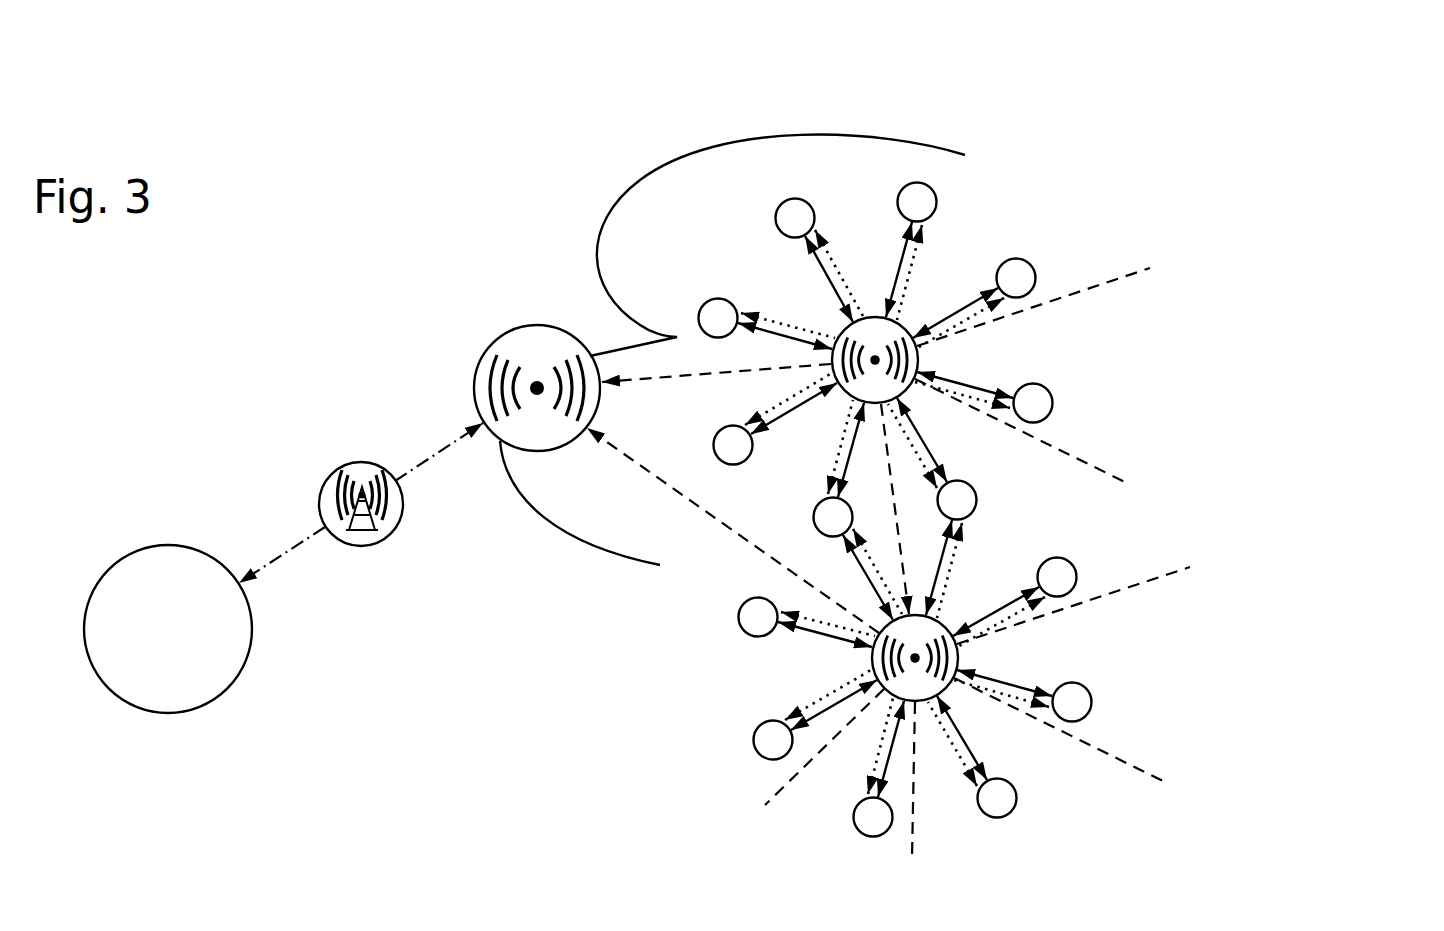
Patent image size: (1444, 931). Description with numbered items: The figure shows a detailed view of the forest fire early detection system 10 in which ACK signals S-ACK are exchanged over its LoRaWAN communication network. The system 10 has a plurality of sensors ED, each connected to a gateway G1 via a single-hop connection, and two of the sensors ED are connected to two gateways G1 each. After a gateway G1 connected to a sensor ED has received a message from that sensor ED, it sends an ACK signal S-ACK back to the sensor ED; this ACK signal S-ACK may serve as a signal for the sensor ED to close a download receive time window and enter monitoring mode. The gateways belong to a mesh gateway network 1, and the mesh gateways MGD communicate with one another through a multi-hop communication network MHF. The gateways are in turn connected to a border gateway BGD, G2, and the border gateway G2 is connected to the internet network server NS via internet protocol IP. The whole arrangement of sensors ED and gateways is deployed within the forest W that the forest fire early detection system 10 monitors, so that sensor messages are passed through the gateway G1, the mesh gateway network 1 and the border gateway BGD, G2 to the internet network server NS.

The forest fire early detection system 10 is at (777, 197).
The border gateway device BGD is at (409, 351).
The border gateway G2 is at (490, 350).
The internet protocol IP is at (318, 506).
The internet network server NS is at (168, 629).
The forest W is at (530, 515).
The mesh gateway device MGD is at (1139, 668).
The gateway G1 is at (960, 655).
The ACK signal S-ACK is at (907, 272).
The end devices/sensors ED is at (1078, 577).
The mesh gateway network 1 is at (1021, 454).
The multi-hop communication network MHF is at (735, 530).